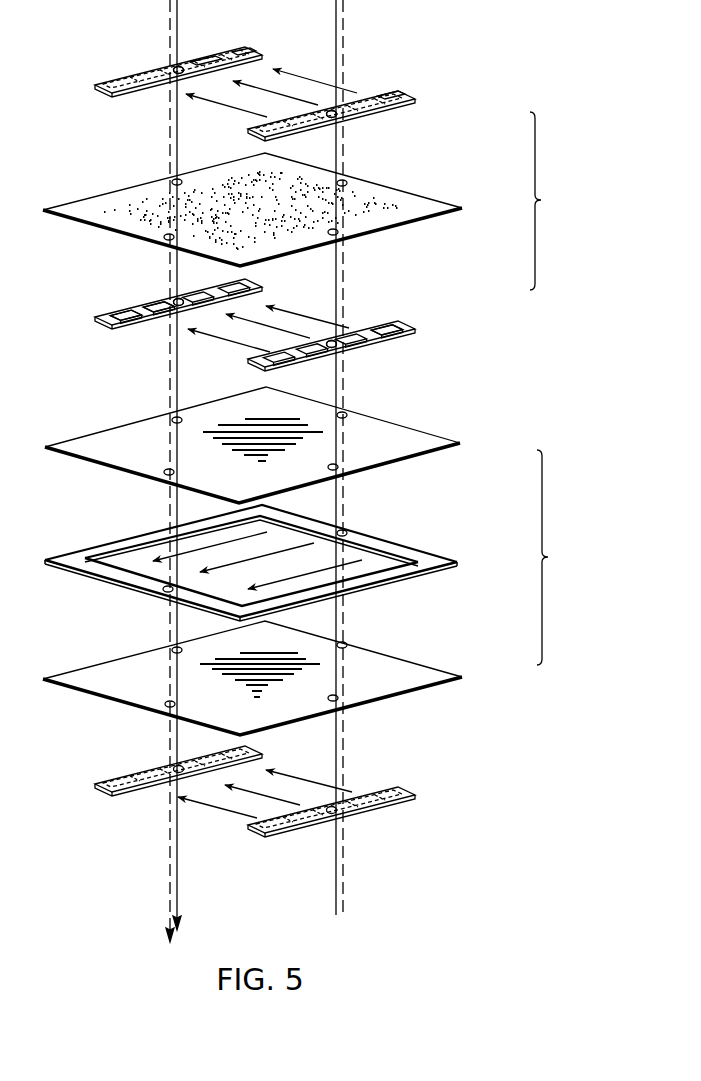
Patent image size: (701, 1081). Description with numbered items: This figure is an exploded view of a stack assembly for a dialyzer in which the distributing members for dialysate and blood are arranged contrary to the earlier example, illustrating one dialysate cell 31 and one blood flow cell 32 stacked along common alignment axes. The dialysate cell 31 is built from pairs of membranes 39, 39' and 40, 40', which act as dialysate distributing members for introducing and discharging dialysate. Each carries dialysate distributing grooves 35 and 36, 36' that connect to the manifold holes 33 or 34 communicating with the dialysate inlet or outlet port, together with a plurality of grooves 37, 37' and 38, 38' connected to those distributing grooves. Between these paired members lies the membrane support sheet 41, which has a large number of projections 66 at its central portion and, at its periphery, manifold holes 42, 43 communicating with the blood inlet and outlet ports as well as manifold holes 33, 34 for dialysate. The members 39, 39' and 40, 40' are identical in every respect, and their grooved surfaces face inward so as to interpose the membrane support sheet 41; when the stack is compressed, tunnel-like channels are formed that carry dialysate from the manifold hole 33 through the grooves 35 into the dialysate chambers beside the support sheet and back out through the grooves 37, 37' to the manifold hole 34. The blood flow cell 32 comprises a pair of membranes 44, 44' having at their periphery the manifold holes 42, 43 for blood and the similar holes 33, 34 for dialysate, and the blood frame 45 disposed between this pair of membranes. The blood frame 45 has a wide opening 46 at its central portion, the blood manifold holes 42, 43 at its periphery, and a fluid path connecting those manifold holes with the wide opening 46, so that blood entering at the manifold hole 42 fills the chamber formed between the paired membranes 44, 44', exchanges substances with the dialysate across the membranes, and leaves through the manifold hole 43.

The dialysate cell 31 is at (551, 201).
The blood flow cell 32 is at (558, 557).
The manifold hole 33 is at (370, 116).
The manifold hole 34 is at (173, 68).
The dialysate distributing groove 35 is at (400, 110).
The dialysate distributing groove 36 is at (208, 32).
The dialysate distributing groove 36' is at (123, 293).
The groove 37 is at (399, 73).
The groove 37' is at (391, 310).
The groove 38 is at (255, 27).
The groove 38' is at (124, 341).
The membrane 39 is at (384, 116).
The membrane 39' is at (386, 315).
The membrane 40 is at (151, 72).
The membrane 40' is at (143, 304).
The membrane support sheet 41 is at (463, 208).
The manifold hole 42 is at (347, 182).
The manifold hole 43 is at (166, 237).
The membrane 44 is at (288, 445).
The membrane 44' is at (289, 678).
The blood frame 45 is at (463, 562).
The wide opening 46 is at (370, 568).
The projections 66 is at (387, 210).